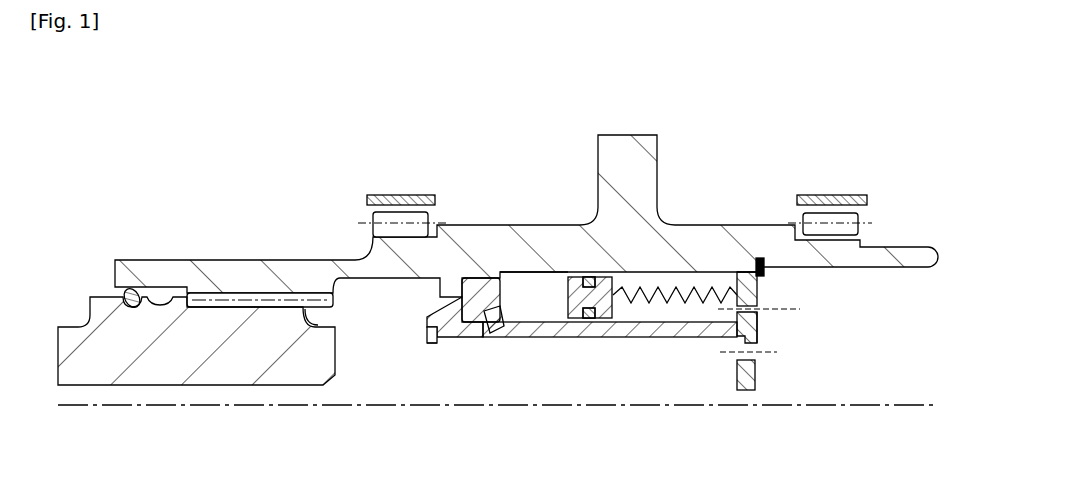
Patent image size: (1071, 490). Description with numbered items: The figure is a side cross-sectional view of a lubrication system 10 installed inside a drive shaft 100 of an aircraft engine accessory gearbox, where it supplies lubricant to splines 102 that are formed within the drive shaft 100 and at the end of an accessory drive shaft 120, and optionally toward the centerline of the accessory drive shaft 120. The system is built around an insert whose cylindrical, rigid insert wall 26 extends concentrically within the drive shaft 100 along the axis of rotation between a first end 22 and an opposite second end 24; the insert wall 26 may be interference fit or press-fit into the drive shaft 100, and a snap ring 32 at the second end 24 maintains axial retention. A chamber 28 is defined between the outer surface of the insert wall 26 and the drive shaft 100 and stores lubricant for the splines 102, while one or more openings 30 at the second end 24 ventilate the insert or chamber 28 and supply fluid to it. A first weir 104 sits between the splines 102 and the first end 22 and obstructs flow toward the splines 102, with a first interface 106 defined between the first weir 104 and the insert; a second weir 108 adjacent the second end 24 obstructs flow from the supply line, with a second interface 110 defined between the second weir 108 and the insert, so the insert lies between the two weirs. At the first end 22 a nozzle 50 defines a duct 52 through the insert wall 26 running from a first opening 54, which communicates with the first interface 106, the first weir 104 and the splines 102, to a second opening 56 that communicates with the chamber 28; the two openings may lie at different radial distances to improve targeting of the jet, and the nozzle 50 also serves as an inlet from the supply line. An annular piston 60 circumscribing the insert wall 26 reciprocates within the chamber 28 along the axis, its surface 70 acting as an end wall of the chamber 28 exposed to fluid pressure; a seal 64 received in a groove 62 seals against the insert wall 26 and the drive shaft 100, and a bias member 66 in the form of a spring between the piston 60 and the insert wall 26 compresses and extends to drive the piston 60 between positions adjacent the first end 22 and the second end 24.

The lubrication system 10 is at (880, 128).
The first end 22 is at (507, 284).
The second end 24 is at (741, 261).
The insert wall 26 is at (660, 338).
The chamber 28 is at (552, 292).
The openings 30 is at (758, 308).
The snap ring 32 is at (766, 272).
The nozzle 50 is at (493, 342).
The duct 52 is at (492, 288).
The first opening 54 is at (488, 332).
The second opening 56 is at (503, 308).
The piston 60 is at (578, 334).
The groove 62 is at (594, 281).
The seal 64 is at (588, 275).
The bias member 66 is at (707, 290).
The surface 70 is at (568, 302).
The drive shaft 100 is at (243, 240).
The splines 102 is at (330, 315).
The first weir 104 is at (428, 337).
The first interface 106 is at (432, 346).
The second weir 108 is at (758, 325).
The second interface 110 is at (757, 355).
The accessory drive shaft 120 is at (90, 285).